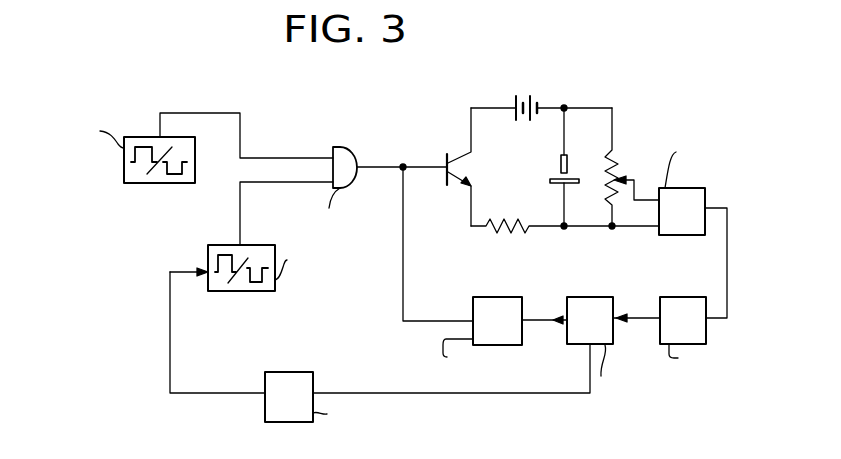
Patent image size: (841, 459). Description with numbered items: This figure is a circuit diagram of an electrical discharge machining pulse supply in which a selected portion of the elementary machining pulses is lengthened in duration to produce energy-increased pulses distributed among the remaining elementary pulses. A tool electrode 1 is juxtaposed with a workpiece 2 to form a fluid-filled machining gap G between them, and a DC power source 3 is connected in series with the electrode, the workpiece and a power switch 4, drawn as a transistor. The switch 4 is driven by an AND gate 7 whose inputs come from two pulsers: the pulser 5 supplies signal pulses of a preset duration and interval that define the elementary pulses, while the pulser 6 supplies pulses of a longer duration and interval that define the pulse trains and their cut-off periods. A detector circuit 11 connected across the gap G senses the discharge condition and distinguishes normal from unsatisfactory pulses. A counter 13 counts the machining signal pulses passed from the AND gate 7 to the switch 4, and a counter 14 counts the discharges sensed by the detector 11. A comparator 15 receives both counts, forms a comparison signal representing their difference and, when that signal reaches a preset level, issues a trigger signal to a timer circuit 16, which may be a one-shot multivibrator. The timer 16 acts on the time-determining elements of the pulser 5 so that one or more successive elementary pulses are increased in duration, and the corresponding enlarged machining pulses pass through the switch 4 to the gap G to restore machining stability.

The tool electrode 1 is at (571, 164).
The workpiece 2 is at (574, 185).
The DC power source 3 is at (528, 95).
The power switch 4 is at (462, 171).
The pulser 5 is at (232, 291).
The pulser 6 is at (145, 183).
The AND gate 7 is at (350, 147).
The detector circuit 11 is at (671, 188).
The counter 13 is at (500, 297).
The counter 14 is at (683, 297).
The comparator 15 is at (590, 297).
The timer circuit 16 is at (293, 372).
The machining gap G is at (558, 172).